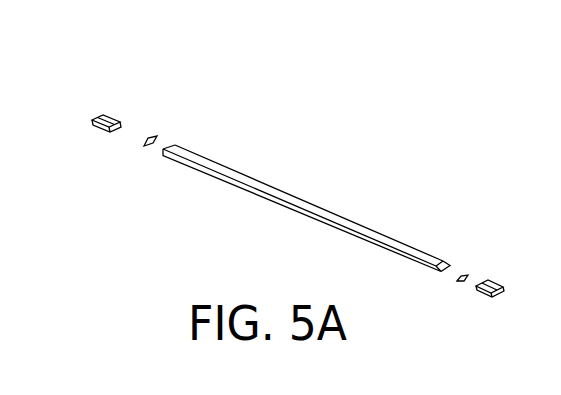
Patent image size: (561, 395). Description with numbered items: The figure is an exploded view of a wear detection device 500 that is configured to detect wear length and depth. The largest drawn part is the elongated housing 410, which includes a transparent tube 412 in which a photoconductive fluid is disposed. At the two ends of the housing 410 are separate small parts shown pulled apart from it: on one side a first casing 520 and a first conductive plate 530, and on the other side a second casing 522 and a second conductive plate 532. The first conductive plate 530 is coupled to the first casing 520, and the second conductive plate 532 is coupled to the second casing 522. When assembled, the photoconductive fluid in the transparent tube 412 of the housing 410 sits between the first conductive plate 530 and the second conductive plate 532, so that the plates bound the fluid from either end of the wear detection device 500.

The wear detection device 500 is at (205, 128).
The housing 410 is at (335, 221).
The transparent tube 412 is at (263, 190).
The first casing 520 is at (100, 131).
The second casing 522 is at (487, 297).
The first conductive plate 530 is at (147, 144).
The second conductive plate 532 is at (462, 274).